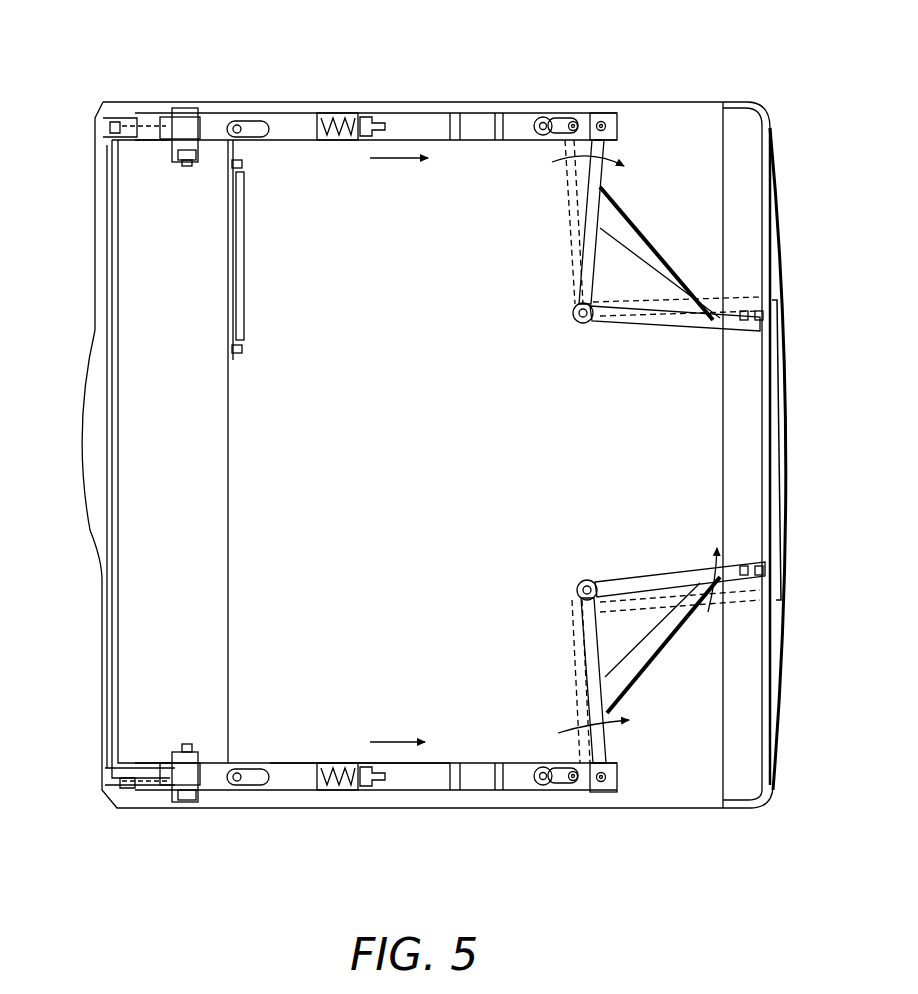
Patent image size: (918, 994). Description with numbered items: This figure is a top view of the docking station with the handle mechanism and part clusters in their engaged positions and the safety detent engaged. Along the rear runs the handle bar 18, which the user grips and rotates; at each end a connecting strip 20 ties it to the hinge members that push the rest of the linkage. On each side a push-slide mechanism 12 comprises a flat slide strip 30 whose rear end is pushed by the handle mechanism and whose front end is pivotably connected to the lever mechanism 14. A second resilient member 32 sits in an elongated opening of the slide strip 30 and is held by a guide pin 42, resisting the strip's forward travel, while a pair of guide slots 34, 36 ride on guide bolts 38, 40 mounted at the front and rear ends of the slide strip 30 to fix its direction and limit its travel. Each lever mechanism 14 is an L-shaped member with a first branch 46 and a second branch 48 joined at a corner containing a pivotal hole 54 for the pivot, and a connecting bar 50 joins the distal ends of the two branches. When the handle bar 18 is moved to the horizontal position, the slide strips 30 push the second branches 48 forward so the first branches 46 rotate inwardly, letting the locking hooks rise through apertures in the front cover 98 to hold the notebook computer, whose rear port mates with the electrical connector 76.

The push-slide mechanism 12 is at (446, 108).
The lever mechanism 14 is at (600, 347).
The handle bar 18 is at (82, 420).
The connecting strip 20 is at (147, 790).
The flat slide strip 30 is at (290, 762).
The second resilient member 32 is at (339, 116).
The guide slot 34 is at (566, 120).
The guide slot 36 is at (262, 128).
The guide bolt 38 is at (538, 120).
The guide bolt 40 is at (241, 118).
The guide pin 42 is at (373, 116).
The first branch 46 is at (670, 560).
The second branch 48 is at (607, 745).
The connecting bar 50 is at (660, 647).
The pivotal hole 54 is at (595, 312).
The electrical connector 76 is at (247, 272).
The front cover 98 is at (792, 438).